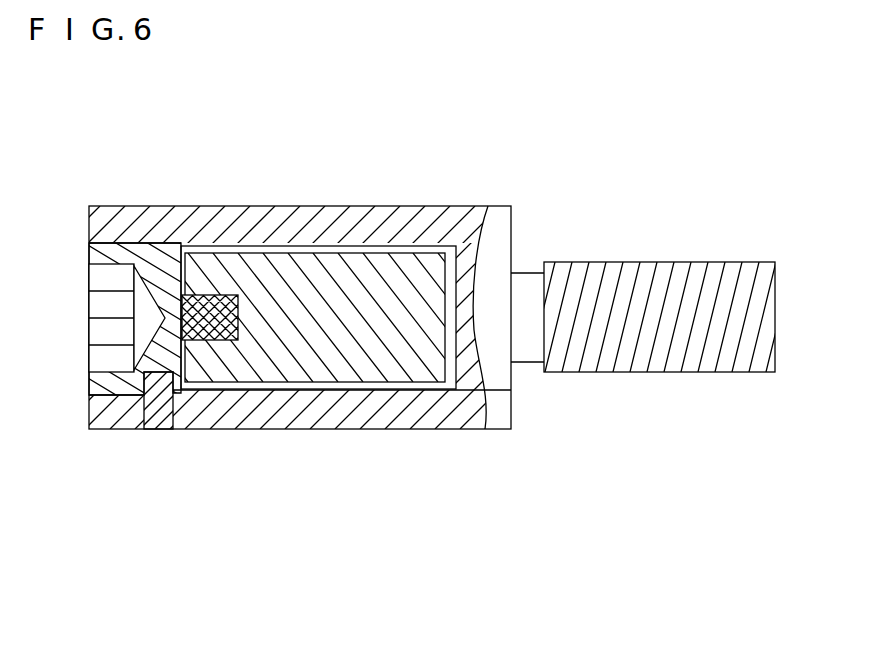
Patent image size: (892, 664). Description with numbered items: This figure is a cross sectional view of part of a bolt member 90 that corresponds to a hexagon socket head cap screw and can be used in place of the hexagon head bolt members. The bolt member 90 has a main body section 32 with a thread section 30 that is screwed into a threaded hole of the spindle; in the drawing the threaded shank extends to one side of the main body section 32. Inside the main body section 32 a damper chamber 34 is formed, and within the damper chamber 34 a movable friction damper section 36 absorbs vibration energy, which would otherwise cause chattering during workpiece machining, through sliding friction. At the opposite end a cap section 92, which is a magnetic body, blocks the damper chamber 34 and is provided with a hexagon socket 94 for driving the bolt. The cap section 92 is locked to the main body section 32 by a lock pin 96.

The thread section 30 is at (597, 338).
The main body section 32 is at (505, 191).
The damper chamber 34 is at (343, 390).
The movable friction damper section 36 is at (253, 363).
The bolt member 90 is at (354, 343).
The cap section 92 is at (145, 252).
The hexagon socket 94 is at (115, 333).
The lock pin 96 is at (152, 405).